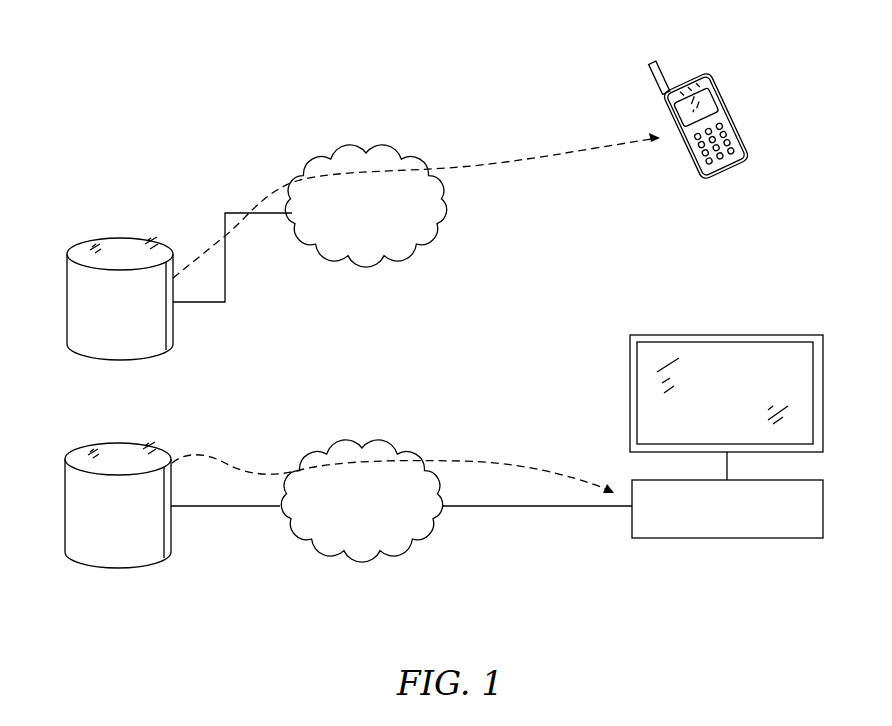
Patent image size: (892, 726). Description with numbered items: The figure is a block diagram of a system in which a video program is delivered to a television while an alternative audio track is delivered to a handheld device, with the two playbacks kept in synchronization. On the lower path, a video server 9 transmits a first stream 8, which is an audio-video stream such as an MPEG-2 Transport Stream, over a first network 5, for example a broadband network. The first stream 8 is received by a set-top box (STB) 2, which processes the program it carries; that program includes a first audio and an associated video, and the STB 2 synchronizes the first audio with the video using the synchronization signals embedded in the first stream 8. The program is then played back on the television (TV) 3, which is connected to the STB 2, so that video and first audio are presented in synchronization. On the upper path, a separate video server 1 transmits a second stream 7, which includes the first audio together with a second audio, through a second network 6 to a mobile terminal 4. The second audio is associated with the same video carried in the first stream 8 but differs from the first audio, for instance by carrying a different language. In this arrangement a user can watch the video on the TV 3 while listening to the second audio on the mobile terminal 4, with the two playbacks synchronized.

The video server 1 is at (121, 250).
The set-top box (STB) 2 is at (727, 538).
The television (TV) 3 is at (727, 335).
The mobile terminal 4 is at (699, 70).
The first network 5 is at (352, 563).
The second network 6 is at (357, 268).
The second stream 7 is at (483, 170).
The first stream 8 is at (459, 452).
The video server 9 is at (118, 446).